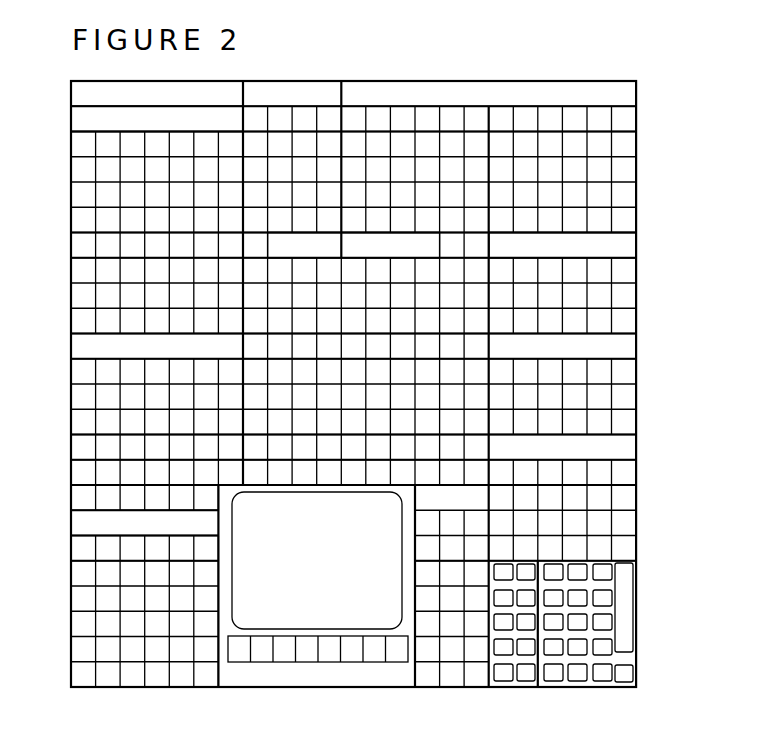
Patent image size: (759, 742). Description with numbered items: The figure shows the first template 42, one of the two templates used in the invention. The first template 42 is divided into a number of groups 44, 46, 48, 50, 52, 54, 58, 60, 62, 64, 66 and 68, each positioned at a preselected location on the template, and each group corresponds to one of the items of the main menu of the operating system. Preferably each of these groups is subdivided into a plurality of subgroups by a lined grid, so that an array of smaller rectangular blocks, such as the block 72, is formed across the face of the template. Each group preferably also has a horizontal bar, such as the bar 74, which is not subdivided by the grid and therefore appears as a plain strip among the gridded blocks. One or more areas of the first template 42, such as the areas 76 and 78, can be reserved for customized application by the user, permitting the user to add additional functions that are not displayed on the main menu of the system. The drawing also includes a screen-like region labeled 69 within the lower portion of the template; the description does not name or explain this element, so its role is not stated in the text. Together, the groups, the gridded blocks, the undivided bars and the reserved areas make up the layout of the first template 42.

The first template 42 is at (592, 241).
The group 44 is at (107, 172).
The group 46 is at (105, 382).
The group 48 is at (109, 553).
The group 50 is at (254, 122).
The group 52 is at (307, 273).
The group 54 is at (473, 272).
The group 58 is at (568, 293).
The group 60 is at (603, 394).
The group 62 is at (578, 500).
The group 64 is at (570, 610).
The group 66 is at (457, 610).
The group 68 is at (284, 650).
The display screen 69 is at (343, 528).
The rectangular block 72 is at (100, 215).
The horizontal bar 74 is at (96, 117).
The reserved area 76 is at (474, 133).
The reserved area 78 is at (598, 137).